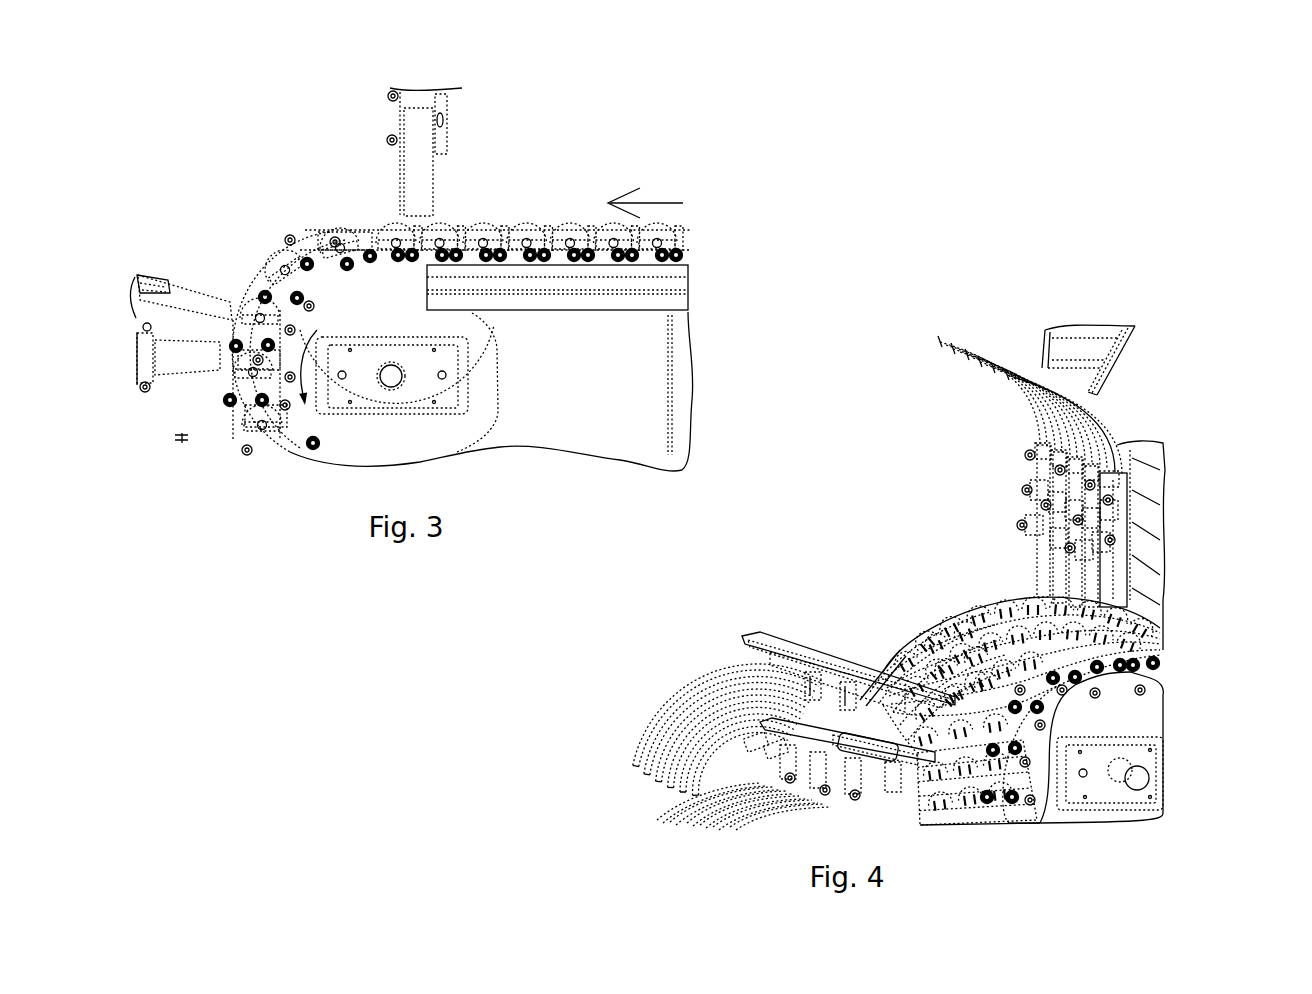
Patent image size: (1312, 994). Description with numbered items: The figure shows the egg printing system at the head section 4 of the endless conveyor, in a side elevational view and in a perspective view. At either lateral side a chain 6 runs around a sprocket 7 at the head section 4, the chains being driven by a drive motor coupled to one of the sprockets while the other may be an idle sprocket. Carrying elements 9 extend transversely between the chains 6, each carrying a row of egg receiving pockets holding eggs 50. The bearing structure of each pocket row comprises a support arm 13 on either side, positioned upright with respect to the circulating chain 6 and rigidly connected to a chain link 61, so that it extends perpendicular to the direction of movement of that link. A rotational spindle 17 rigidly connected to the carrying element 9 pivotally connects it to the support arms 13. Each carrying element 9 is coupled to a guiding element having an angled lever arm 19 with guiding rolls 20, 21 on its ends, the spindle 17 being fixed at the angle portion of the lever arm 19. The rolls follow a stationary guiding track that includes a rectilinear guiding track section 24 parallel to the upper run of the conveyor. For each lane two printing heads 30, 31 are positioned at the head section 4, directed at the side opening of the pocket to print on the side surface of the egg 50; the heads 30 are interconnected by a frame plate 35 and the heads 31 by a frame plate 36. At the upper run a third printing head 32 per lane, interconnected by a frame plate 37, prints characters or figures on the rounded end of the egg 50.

In FIG. 3, the head section 4 is at (233, 272).
In FIG. 4, the head section 4 is at (928, 593).
In FIG. 3, the chain 6 is at (388, 292).
In FIG. 4, the chain 6 is at (1070, 693).
In FIG. 3, the sprocket 7 is at (488, 375).
In FIG. 4, the sprocket 7 is at (1110, 773).
In FIG. 4, the carrying element 9 is at (898, 705).
In FIG. 3, the support arm 13 is at (283, 297).
In FIG. 4, the support arm 13 is at (1110, 670).
In FIG. 4, the rotational spindle 17 is at (1027, 775).
In FIG. 3, the angled lever arm 19 is at (472, 250).
In FIG. 3, the guiding roll 20 is at (232, 392).
In FIG. 3, the guiding roll 21 is at (250, 418).
In FIG. 3, the rectilinear guiding track section 24 is at (557, 265).
In FIG. 3, the printing head 30 is at (174, 364).
In FIG. 4, the printing head 30 is at (877, 767).
In FIG. 3, the printing head 31 is at (180, 305).
In FIG. 4, the printing head 31 is at (893, 670).
In FIG. 3, the third printing head 32 is at (422, 175).
In FIG. 4, the third printing head 32 is at (1112, 563).
In FIG. 4, the frame plate 35 is at (820, 730).
In FIG. 4, the frame plate 36 is at (820, 660).
In FIG. 3, the frame plate 37 is at (443, 127).
In FIG. 4, the frame plate 37 is at (1127, 492).
In FIG. 3, the egg 50 is at (577, 223).
In FIG. 4, the egg 50 is at (993, 620).
In FIG. 3, the chain link 61 is at (313, 307).